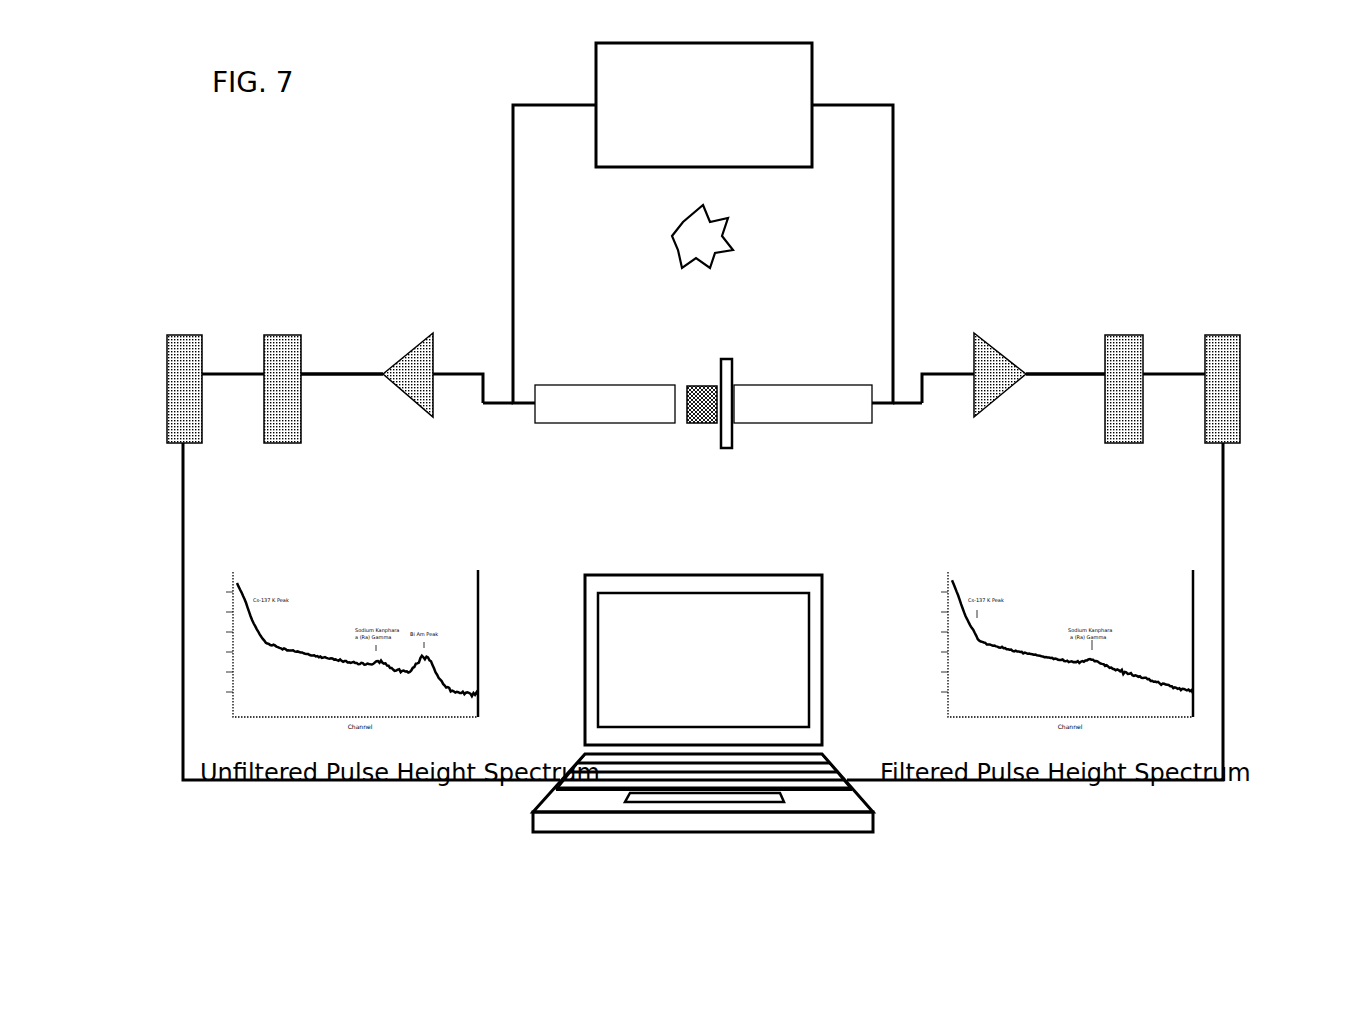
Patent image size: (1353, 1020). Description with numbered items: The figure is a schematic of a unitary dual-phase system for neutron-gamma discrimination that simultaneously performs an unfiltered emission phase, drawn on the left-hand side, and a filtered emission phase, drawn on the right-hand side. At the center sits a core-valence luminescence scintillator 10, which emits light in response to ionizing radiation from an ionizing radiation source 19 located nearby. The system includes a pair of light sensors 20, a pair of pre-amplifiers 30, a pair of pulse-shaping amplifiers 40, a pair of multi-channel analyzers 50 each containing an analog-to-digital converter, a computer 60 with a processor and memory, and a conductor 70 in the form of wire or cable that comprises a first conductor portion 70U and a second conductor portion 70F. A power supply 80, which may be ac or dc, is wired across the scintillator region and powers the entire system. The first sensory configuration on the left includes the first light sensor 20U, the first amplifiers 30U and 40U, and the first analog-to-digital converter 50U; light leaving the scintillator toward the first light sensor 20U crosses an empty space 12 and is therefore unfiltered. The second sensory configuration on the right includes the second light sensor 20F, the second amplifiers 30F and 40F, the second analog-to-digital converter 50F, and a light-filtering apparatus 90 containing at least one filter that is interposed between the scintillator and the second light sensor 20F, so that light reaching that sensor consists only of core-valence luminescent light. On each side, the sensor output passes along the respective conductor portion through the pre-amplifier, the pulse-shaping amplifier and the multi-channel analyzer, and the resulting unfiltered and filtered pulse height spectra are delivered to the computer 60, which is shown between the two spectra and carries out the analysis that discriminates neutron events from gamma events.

The power supply 80 is at (704, 105).
The ionizing radiation source 19 is at (702, 236).
The light-filtering apparatus 90 is at (727, 358).
The core-valence luminescence scintillator 10 is at (703, 383).
The empty space 12 is at (681, 420).
The light sensors 20 is at (703, 329).
The first light sensor 20U is at (620, 383).
The second light sensor 20F is at (781, 383).
The pre-amplifiers 30 is at (704, 326).
The first pre-amplifier 30U is at (410, 345).
The second pre-amplifier 30F is at (995, 345).
The pulse-shaping amplifiers 40 is at (700, 339).
The first pulse-shaping amplifier 40U is at (285, 333).
The second pulse-shaping amplifier 40F is at (1118, 333).
The multi-channel analyzers 50 is at (700, 339).
The first analog-to-digital converter 50U is at (183, 333).
The second analog-to-digital converter 50F is at (1220, 333).
The conductor 70 is at (703, 305).
The first conductor portion 70U is at (325, 370).
The second conductor portion 70F is at (1077, 370).
The computer 60 is at (703, 703).